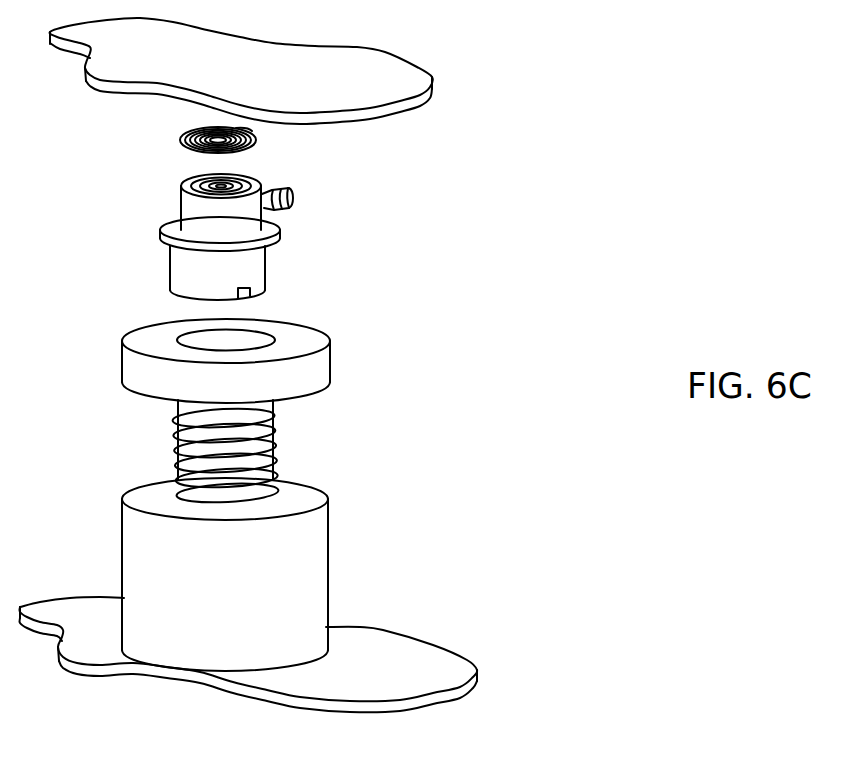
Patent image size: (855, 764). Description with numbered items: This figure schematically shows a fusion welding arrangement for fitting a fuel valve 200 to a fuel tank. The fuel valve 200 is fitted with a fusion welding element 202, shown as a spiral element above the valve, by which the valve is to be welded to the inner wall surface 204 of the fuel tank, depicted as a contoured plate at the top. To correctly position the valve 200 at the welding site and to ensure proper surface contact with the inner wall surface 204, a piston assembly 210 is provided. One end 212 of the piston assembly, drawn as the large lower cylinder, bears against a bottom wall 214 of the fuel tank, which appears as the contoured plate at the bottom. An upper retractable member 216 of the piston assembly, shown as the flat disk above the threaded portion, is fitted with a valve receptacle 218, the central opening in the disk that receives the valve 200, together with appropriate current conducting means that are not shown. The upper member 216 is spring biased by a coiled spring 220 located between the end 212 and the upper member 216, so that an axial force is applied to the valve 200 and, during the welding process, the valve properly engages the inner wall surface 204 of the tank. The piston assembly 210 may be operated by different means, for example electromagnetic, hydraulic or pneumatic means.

The fuel valve 200 is at (150, 264).
The fusion welding element 202 is at (257, 139).
The inner wall surface 204 is at (387, 112).
The piston assembly 210 is at (225, 487).
The end of the piston assembly 212 is at (230, 655).
The bottom wall 214 is at (100, 655).
The upper retractable member 216 is at (240, 353).
The valve receptacle 218 is at (213, 342).
The coiled spring 220 is at (273, 437).